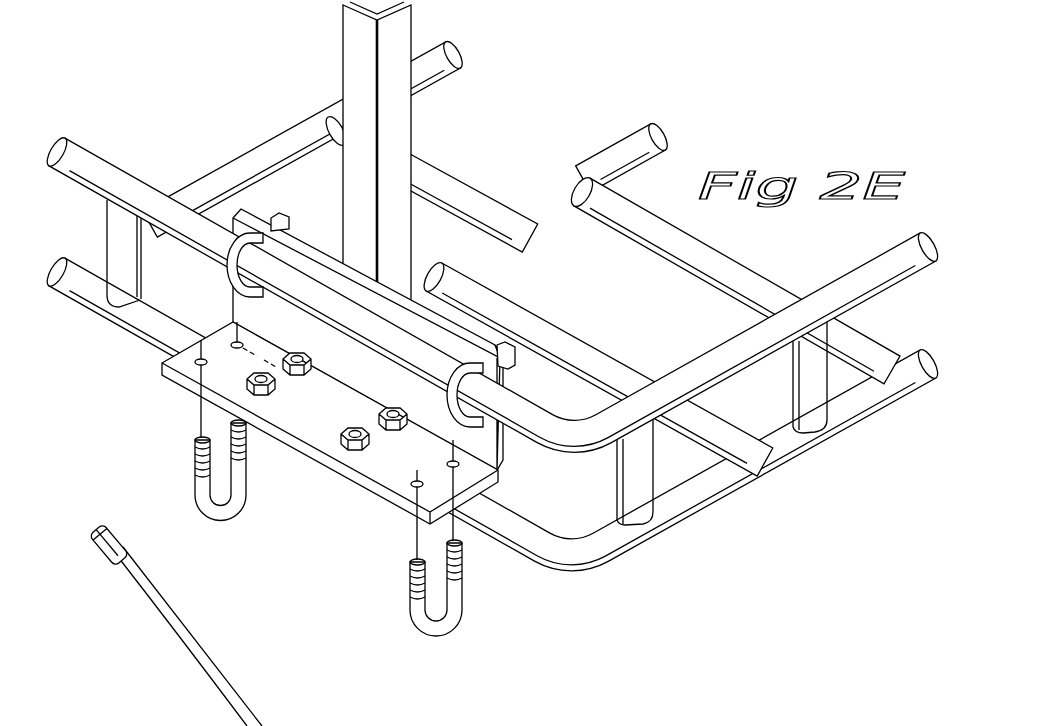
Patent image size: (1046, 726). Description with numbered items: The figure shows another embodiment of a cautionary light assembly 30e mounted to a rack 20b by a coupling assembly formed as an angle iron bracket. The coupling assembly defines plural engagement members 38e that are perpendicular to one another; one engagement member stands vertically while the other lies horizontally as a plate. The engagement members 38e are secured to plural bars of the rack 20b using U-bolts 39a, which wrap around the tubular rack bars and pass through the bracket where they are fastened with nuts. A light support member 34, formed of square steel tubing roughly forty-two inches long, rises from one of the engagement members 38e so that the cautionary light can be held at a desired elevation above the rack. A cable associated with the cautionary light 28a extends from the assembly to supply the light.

The rack 20b is at (725, 478).
The cautionary light 28a is at (102, 553).
The cautionary light assembly 30e is at (492, 127).
The light support member 34 is at (360, 71).
The engagement members 38e is at (432, 333).
The U-bolts 39a is at (228, 258).